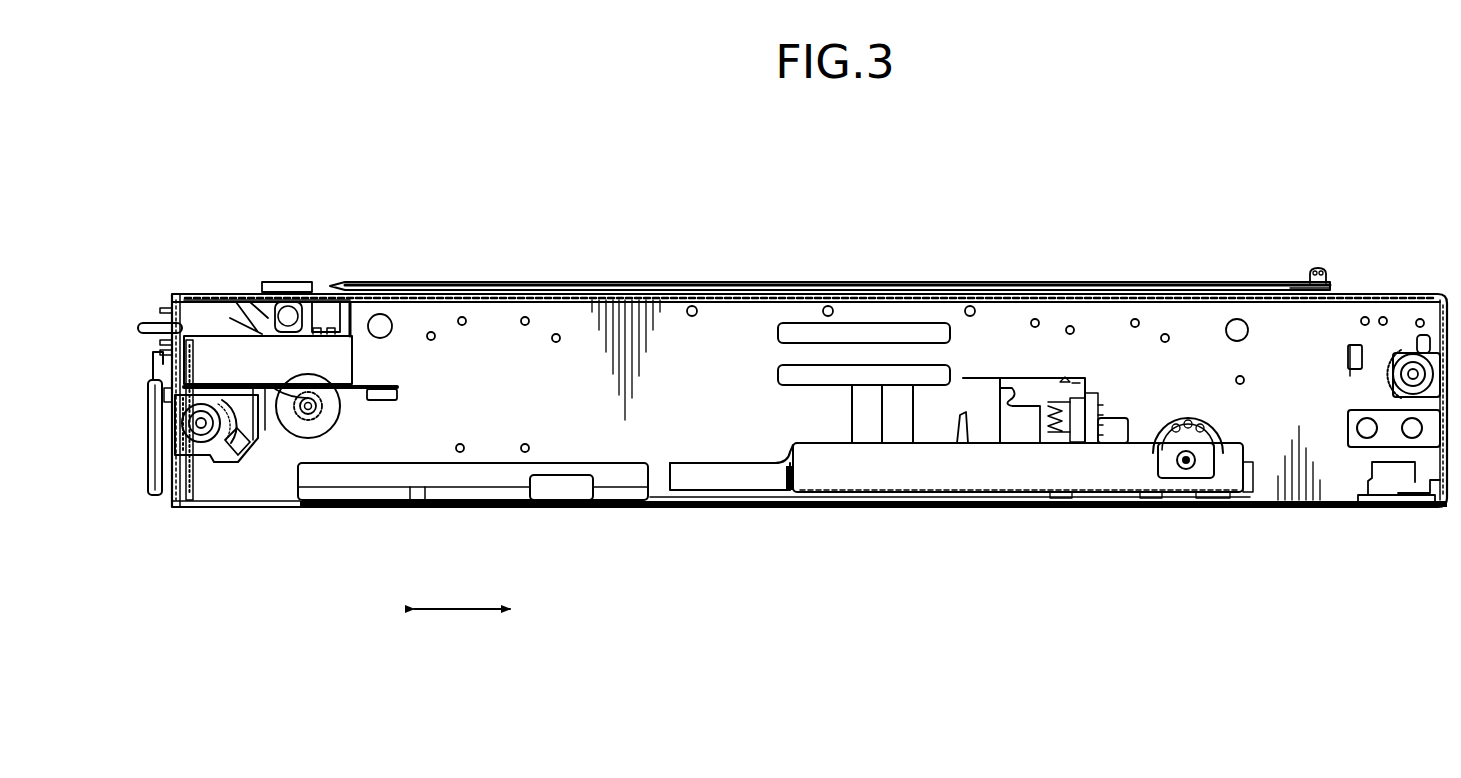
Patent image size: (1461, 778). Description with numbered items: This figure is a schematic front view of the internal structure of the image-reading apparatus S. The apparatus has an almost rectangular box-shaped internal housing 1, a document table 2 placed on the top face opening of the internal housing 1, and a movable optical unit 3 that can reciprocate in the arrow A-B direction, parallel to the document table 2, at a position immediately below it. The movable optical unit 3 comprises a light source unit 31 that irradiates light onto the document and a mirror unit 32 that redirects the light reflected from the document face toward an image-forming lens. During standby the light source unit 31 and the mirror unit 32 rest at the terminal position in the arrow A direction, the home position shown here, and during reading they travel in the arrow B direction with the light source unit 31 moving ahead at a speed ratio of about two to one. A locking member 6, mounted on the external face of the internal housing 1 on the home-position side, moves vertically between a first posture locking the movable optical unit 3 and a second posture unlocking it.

The image-reading apparatus S is at (1163, 226).
The internal housing 1 is at (978, 512).
The document table 2 is at (482, 293).
The movable optical unit 3 is at (286, 385).
The light source unit 31 is at (230, 368).
The mirror unit 32 is at (222, 472).
The locking member 6 is at (148, 462).